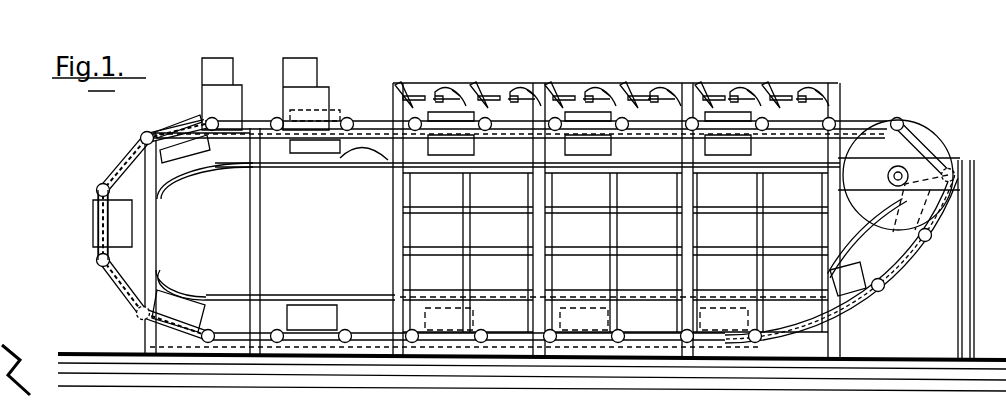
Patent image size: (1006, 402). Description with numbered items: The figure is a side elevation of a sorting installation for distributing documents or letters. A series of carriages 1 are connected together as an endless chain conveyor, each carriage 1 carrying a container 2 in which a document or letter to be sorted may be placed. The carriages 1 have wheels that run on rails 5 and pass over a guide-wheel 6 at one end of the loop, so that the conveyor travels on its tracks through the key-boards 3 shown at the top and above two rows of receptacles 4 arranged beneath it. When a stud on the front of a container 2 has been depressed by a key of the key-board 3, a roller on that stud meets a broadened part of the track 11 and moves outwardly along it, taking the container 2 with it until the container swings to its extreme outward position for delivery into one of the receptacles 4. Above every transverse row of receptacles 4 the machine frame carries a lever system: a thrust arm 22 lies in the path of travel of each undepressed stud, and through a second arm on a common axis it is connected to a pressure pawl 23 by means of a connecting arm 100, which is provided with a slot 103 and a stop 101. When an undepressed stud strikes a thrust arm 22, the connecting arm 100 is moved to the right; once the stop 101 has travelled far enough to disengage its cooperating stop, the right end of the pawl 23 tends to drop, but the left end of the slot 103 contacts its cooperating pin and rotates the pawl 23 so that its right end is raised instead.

The carriages 1 is at (565, 120).
The container 2 is at (607, 143).
The key-boards 3 is at (287, 73).
The receptacles 4 is at (415, 268).
The rails 5 is at (637, 133).
The guide-wheel 6 is at (933, 140).
The track 11 is at (362, 156).
The thrust arm 22 is at (410, 106).
The pressure pawl 23 is at (453, 93).
The connecting arm 100 is at (422, 97).
The stop 101 is at (437, 90).
The slot 103 is at (453, 398).